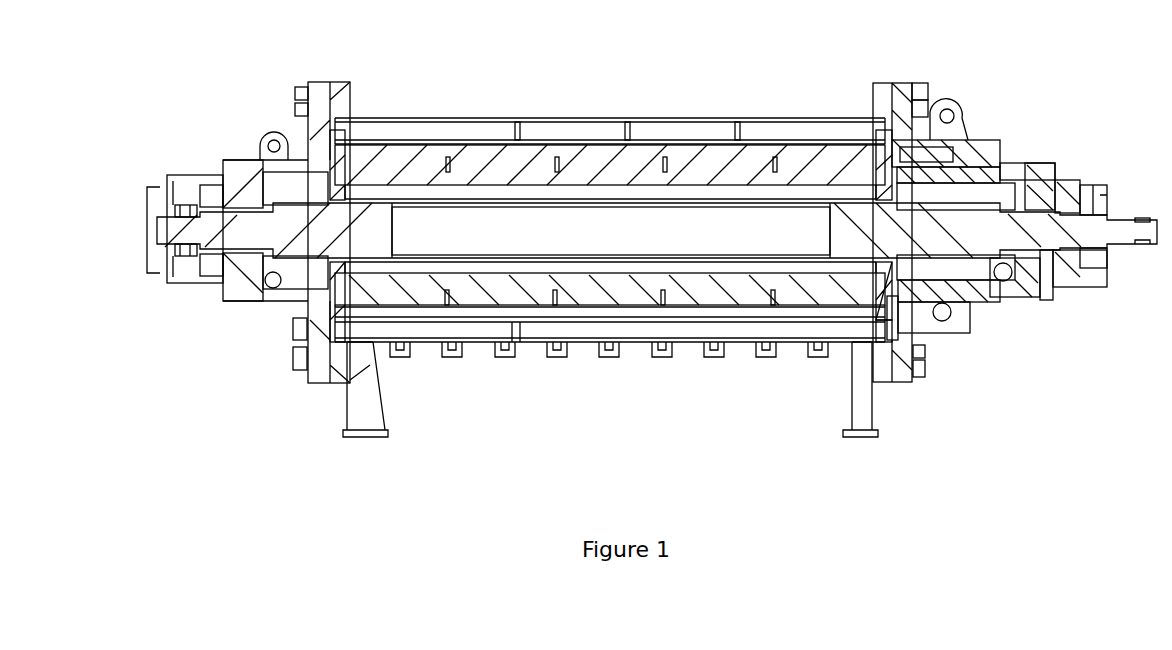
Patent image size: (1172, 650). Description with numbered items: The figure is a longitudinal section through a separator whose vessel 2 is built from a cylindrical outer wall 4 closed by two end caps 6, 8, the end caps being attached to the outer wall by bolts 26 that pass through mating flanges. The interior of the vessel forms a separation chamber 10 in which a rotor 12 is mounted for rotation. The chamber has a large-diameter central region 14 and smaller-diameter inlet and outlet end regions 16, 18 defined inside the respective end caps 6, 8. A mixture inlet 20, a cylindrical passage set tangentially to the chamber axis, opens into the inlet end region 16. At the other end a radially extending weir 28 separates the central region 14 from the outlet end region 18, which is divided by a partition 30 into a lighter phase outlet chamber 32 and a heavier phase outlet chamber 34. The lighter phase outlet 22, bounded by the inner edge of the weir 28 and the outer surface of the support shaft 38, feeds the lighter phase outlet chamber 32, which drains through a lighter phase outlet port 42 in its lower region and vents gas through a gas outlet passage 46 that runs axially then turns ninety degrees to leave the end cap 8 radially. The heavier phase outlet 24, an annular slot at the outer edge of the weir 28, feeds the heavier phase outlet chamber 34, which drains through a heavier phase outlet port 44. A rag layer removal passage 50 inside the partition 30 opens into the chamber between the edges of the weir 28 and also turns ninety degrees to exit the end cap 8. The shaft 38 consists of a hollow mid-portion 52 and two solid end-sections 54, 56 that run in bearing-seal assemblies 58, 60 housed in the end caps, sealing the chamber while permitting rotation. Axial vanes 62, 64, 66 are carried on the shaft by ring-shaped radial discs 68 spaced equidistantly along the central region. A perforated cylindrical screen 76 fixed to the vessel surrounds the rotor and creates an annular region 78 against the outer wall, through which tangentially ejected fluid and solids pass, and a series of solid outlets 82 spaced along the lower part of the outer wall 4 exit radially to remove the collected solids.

The vessel 2 is at (716, 50).
The outer wall 4 is at (456, 120).
The end cap 6 is at (258, 172).
The end cap 8 is at (923, 195).
The separation chamber 10 is at (622, 272).
The rotor 12 is at (1160, 255).
The central region 14 is at (672, 192).
The inlet end region 16 is at (310, 272).
The outlet end region 18 is at (937, 152).
The mixture inlet 20 is at (275, 287).
The lighter phase outlet 22 is at (882, 313).
The heavier phase outlet 24 is at (887, 320).
The bolts 26 is at (297, 95).
The weir 28 is at (847, 143).
The partition 30 is at (922, 292).
The lighter phase outlet chamber 32 is at (953, 295).
The heavier phase outlet chamber 34 is at (907, 303).
The support shaft 38 is at (420, 257).
The lighter phase outlet port 42 is at (1003, 273).
The heavier phase outlet port 44 is at (946, 318).
The gas outlet passage 46 is at (1037, 228).
The rag layer removal passage 50 is at (873, 108).
The hollow mid-portion 52 is at (418, 200).
The solid end-section 54 is at (190, 205).
The solid end-section 56 is at (1040, 227).
The bearing-seal assembly 58 is at (212, 273).
The bearing-seal assembly 60 is at (1088, 213).
The axial vane 62 is at (502, 195).
The axial vane 64 is at (535, 172).
The axial vane 66 is at (597, 150).
The radial disc 68 is at (667, 172).
The screen 76 is at (463, 317).
The annular region 78 is at (545, 330).
The solid outlets 82 is at (663, 355).